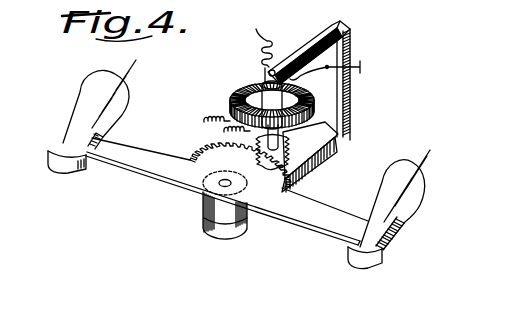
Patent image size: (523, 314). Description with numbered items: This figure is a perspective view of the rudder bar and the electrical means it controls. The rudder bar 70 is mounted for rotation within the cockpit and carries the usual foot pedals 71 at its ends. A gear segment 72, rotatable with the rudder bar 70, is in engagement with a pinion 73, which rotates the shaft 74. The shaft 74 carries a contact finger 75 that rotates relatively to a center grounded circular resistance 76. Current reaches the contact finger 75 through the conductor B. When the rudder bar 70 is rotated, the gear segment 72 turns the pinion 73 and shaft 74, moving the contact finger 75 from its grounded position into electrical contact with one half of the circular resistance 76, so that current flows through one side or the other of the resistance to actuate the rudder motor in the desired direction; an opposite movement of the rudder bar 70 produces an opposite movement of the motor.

The rudder bar 70 is at (297, 209).
The foot pedals 71 is at (82, 105).
The gear segment 72 is at (200, 152).
The pinion 73 is at (290, 146).
The shaft 74 is at (284, 136).
The contact finger 75 is at (283, 80).
The circular resistance 76 is at (238, 92).
The conductor B is at (256, 29).